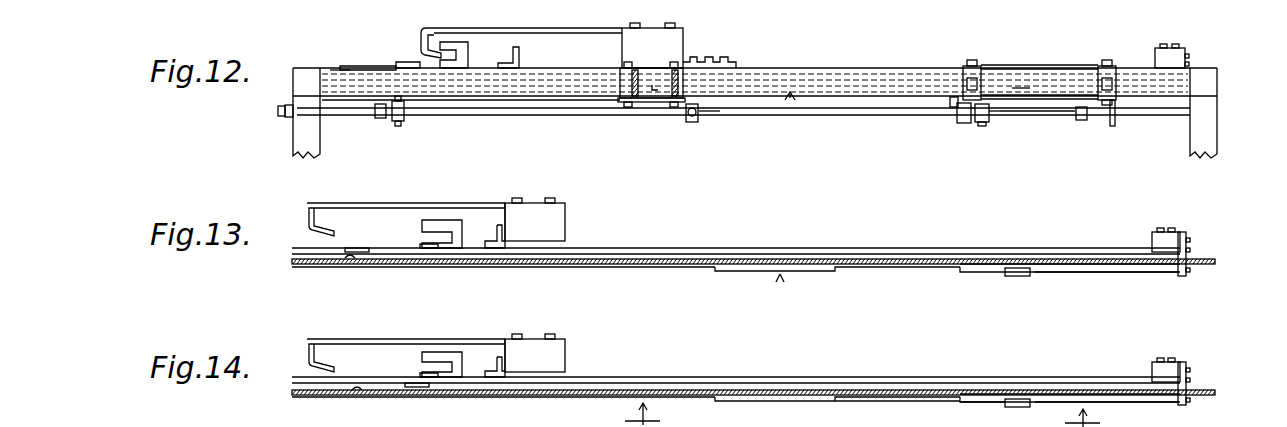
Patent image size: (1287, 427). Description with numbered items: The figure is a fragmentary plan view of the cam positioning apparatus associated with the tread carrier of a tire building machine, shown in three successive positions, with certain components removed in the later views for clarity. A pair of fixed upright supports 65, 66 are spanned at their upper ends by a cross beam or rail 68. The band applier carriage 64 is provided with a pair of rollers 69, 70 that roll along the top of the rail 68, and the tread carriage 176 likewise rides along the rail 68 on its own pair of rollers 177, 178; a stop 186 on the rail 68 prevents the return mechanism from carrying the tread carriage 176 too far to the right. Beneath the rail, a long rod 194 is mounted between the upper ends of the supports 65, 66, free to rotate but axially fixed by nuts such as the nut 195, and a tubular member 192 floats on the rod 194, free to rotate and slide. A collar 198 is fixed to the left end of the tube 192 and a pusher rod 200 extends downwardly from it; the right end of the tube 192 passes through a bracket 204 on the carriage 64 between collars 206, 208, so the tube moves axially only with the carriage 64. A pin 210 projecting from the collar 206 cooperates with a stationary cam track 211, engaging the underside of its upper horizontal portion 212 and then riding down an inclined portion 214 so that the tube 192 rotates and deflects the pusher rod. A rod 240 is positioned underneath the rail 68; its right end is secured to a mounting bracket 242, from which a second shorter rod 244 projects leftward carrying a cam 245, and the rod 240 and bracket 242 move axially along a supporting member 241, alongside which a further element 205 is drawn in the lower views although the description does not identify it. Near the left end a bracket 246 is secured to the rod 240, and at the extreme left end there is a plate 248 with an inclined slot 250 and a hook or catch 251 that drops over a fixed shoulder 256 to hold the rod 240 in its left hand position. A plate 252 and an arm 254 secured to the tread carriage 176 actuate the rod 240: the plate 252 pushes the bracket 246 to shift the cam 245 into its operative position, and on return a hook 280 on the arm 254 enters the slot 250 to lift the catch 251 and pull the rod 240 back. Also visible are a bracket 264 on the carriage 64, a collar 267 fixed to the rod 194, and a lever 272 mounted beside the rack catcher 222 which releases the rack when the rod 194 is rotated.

In FIG. 12, the carriage 64 is at (1045, 64).
In FIG. 12, the fixed upright support 65 is at (305, 112).
In FIG. 12, the fixed upright support 66 is at (1217, 108).
In FIG. 12, the rail 68 is at (558, 98).
In FIG. 12, the roller 69 is at (962, 74).
In FIG. 12, the roller 70 is at (1118, 75).
In FIG. 12, the tread carriage 176 is at (658, 102).
In FIG. 12, the roller 177 is at (625, 88).
In FIG. 12, the roller 178 is at (668, 86).
In FIG. 12, the stop 186 is at (708, 58).
In FIG. 12, the tubular member 192 is at (820, 116).
In FIG. 12, the rod 194 is at (1052, 116).
In FIG. 12, the nut 195 is at (278, 111).
In FIG. 12, the collar 198 is at (705, 118).
In FIG. 12, the pusher rod 200 is at (692, 122).
In FIG. 12, the bracket 204 is at (980, 126).
In FIG. 14, the stop block 205 is at (1010, 407).
In FIG. 12, the collar 206 is at (962, 123).
In FIG. 12, the collar 208 is at (992, 120).
In FIG. 12, the pin 210 is at (950, 104).
In FIG. 12, the cam track 211 is at (788, 100).
In FIG. 13, the cam track 211 is at (780, 274).
In FIG. 14, the cam track 211 is at (660, 421).
In FIG. 14, the upper horizontal portion 212 is at (933, 404).
In FIG. 14, the inclined portion 214 is at (838, 404).
In FIG. 12, the rack catcher 222 is at (400, 122).
In FIG. 12, the rod 240 is at (836, 68).
In FIG. 13, the rod 240 is at (808, 248).
In FIG. 14, the rod 240 is at (826, 377).
In FIG. 13, the supporting member 241 is at (1068, 266).
In FIG. 14, the supporting member 241 is at (905, 396).
In FIG. 12, the mounting bracket 242 is at (1178, 50).
In FIG. 13, the mounting bracket 242 is at (1168, 232).
In FIG. 14, the mounting bracket 242 is at (1168, 362).
In FIG. 13, the second shorter rod 244 is at (1122, 274).
In FIG. 14, the second shorter rod 244 is at (1132, 404).
In FIG. 12, the cam 245 is at (1014, 90).
In FIG. 13, the cam 245 is at (1015, 276).
In FIG. 12, the bracket 246 is at (519, 60).
In FIG. 13, the bracket 246 is at (497, 228).
In FIG. 14, the bracket 246 is at (497, 372).
In FIG. 12, the plate 248 is at (468, 55).
In FIG. 13, the plate 248 is at (428, 222).
In FIG. 14, the plate 248 is at (462, 358).
In FIG. 12, the inclined slot 250 is at (420, 55).
In FIG. 13, the inclined slot 250 is at (424, 236).
In FIG. 14, the inclined slot 250 is at (428, 362).
In FIG. 12, the catch 251 is at (390, 66).
In FIG. 13, the catch 251 is at (410, 254).
In FIG. 14, the catch 251 is at (415, 388).
In FIG. 12, the plate 252 is at (675, 42).
In FIG. 13, the plate 252 is at (565, 226).
In FIG. 14, the plate 252 is at (565, 356).
In FIG. 12, the arm 254 is at (560, 28).
In FIG. 13, the arm 254 is at (396, 203).
In FIG. 14, the arm 254 is at (446, 339).
In FIG. 12, the fixed shoulder 256 is at (355, 78).
In FIG. 13, the fixed shoulder 256 is at (350, 260).
In FIG. 14, the fixed shoulder 256 is at (357, 388).
In FIG. 12, the bracket 264 is at (1115, 122).
In FIG. 12, the collar 267 is at (1085, 120).
In FIG. 12, the lever 272 is at (380, 118).
In FIG. 12, the hook 280 is at (438, 52).
In FIG. 13, the hook 280 is at (320, 231).
In FIG. 14, the hook 280 is at (322, 367).